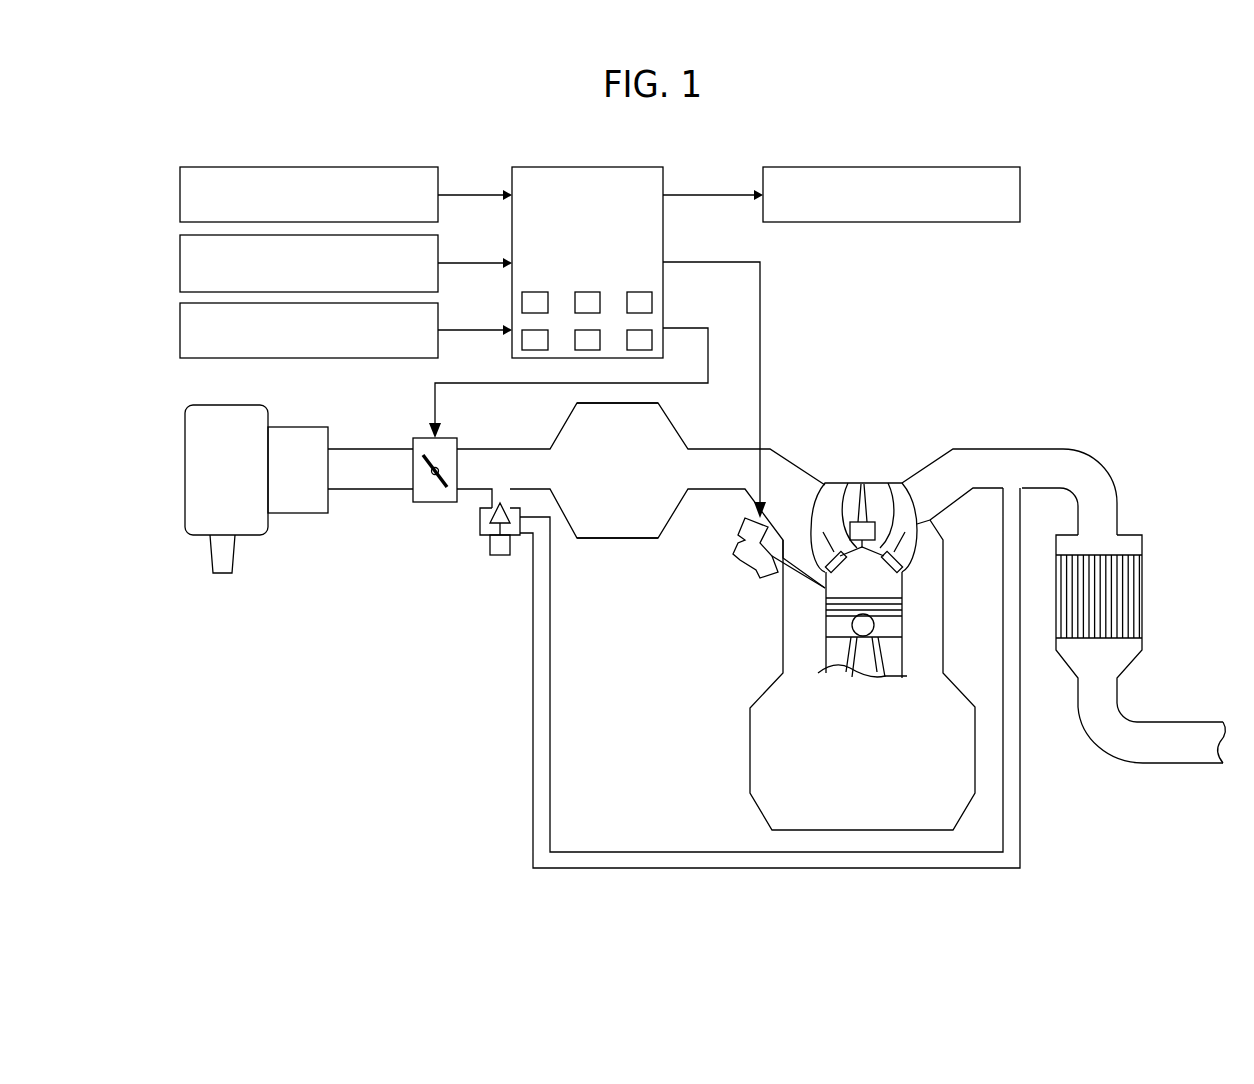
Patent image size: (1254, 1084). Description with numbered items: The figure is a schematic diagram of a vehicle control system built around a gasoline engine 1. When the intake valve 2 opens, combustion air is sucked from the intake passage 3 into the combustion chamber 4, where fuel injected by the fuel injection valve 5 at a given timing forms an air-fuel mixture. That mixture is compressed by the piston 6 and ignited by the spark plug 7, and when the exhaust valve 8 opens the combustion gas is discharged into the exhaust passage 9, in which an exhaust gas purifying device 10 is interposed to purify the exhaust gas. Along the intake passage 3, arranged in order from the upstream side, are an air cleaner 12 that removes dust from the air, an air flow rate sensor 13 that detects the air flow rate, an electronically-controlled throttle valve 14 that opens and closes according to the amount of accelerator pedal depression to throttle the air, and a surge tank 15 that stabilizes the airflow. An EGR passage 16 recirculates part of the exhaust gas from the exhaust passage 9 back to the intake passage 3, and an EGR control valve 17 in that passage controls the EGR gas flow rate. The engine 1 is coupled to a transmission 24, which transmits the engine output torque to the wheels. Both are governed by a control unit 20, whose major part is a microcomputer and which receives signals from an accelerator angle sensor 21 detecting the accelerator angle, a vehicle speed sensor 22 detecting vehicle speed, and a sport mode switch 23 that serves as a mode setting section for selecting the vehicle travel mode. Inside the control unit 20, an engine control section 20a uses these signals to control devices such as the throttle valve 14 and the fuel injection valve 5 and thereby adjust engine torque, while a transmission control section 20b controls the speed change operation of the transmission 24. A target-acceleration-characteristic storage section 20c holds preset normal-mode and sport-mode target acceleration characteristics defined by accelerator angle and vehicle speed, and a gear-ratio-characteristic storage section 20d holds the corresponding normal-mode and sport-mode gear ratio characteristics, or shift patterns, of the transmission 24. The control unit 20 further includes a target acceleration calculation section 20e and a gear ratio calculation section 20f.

The engine 1 is at (946, 314).
The intake valve 2 is at (824, 490).
The intake passage 3 is at (721, 449).
The combustion chamber 4 is at (910, 587).
The fuel injection valve 5 is at (740, 562).
The piston 6 is at (895, 627).
The spark plug 7 is at (845, 500).
The exhaust valve 8 is at (893, 500).
The exhaust passage 9 is at (1010, 449).
The exhaust gas purifying device 10 is at (1142, 597).
The air cleaner 12 is at (185, 470).
The air flow rate sensor 13 is at (296, 513).
The throttle valve 14 is at (435, 502).
The surge tank 15 is at (618, 540).
The EGR passage 16 is at (552, 705).
The EGR control valve 17 is at (500, 556).
The control unit 20 is at (573, 167).
The engine control section 20a is at (538, 290).
The transmission control section 20b is at (590, 290).
The target-acceleration-characteristic storage section 20c is at (645, 290).
The gear-ratio-characteristic storage section 20d is at (548, 339).
The target acceleration calculation section 20e is at (600, 339).
The gear ratio calculation section 20f is at (645, 328).
The accelerator angle sensor 21 is at (180, 194).
The vehicle speed sensor 22 is at (180, 262).
The sport mode switch 23 is at (180, 329).
The transmission 24 is at (893, 167).